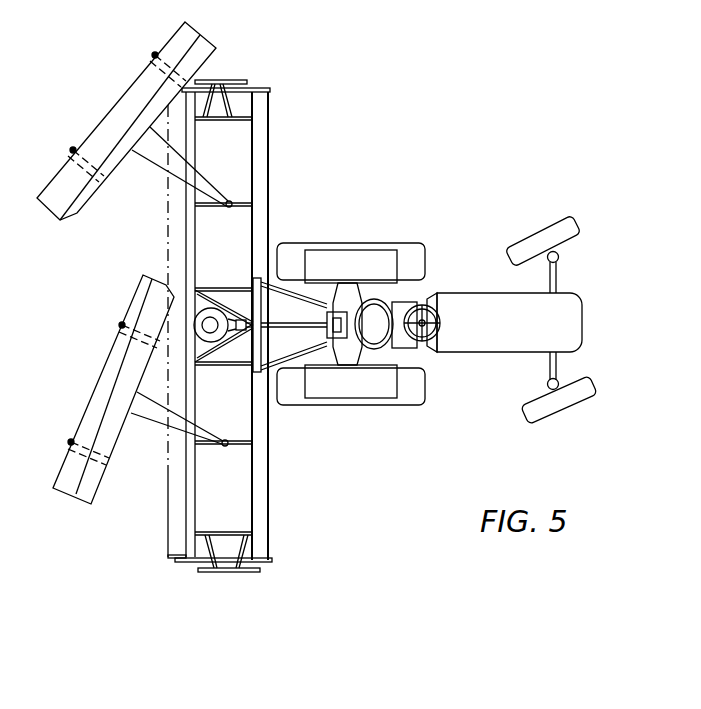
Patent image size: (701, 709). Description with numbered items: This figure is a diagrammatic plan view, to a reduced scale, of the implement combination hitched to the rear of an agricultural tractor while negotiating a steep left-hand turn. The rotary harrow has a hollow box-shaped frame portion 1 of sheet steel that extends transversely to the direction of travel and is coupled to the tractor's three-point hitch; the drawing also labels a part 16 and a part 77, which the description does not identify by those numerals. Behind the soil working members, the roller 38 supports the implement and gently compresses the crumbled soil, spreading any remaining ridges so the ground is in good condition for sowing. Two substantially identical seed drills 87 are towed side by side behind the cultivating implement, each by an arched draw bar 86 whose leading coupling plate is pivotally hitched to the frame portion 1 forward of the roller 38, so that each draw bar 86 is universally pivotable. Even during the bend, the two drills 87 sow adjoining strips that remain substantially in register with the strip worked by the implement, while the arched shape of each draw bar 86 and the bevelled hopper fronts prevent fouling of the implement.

The hollow box-shaped frame portion 1 is at (258, 186).
The gearbox 16 is at (205, 306).
The roller 38 is at (162, 243).
The hitch bracket 77 is at (232, 82).
The arched draw bar 86 is at (157, 157).
The seed drill 87 is at (100, 117).